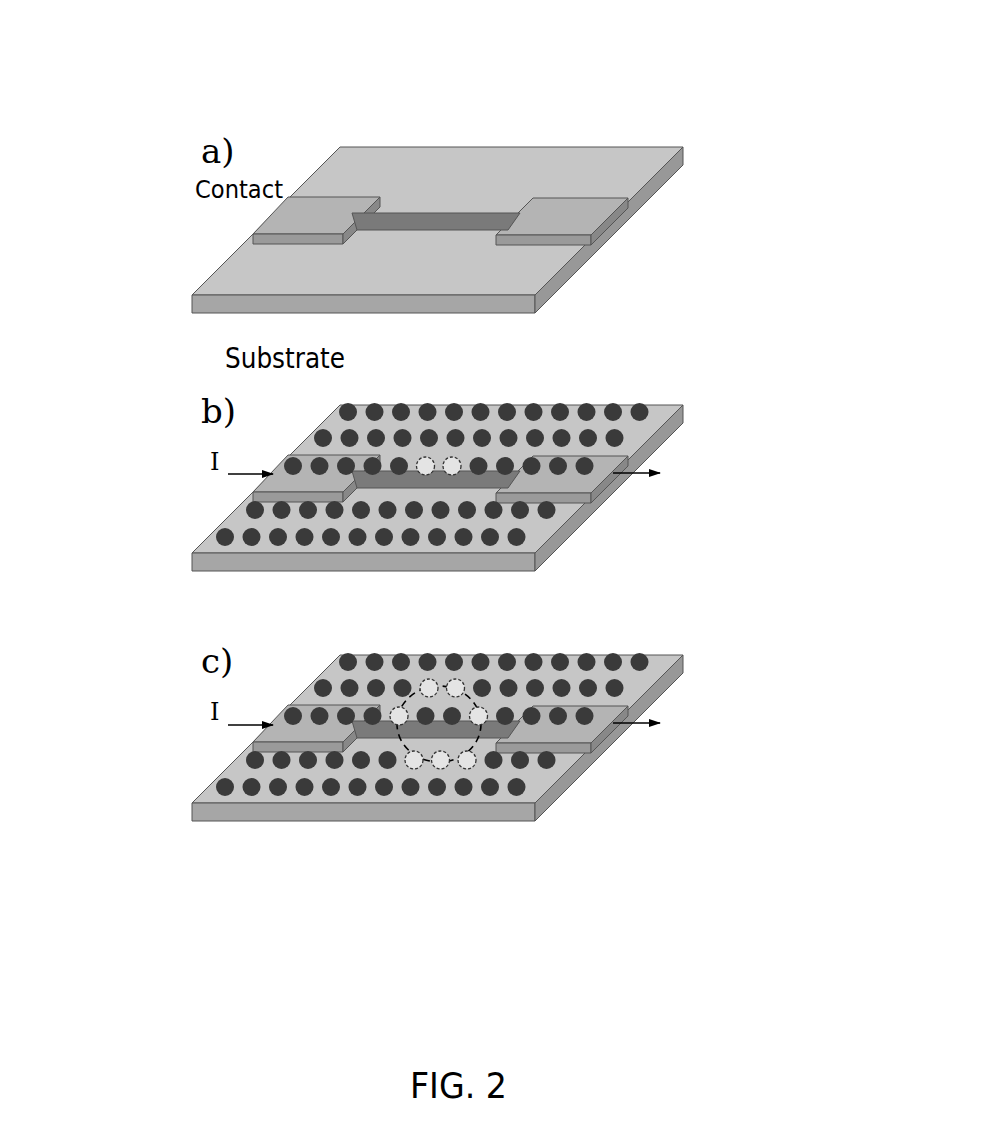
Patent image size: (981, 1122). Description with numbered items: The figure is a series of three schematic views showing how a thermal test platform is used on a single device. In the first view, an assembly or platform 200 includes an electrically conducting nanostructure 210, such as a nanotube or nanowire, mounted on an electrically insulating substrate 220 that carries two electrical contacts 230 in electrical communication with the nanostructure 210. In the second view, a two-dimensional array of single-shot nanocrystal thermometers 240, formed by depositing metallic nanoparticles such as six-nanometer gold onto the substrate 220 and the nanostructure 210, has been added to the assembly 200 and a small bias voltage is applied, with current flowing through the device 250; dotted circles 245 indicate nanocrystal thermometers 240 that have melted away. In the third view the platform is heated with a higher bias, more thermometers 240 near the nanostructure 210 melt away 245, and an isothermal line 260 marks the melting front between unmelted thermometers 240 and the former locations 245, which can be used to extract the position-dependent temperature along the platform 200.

The assembly or platform 200 is at (444, 193).
The electrically conducting nanostructure 210 is at (412, 215).
The electrically insulating substrate 220 is at (375, 163).
The electrical contacts 230 is at (598, 207).
The nanocrystal thermometers 240 is at (645, 408).
The dotted circles 245 is at (423, 465).
The device with current flow 250 is at (423, 460).
The isothermal line 260 is at (443, 772).